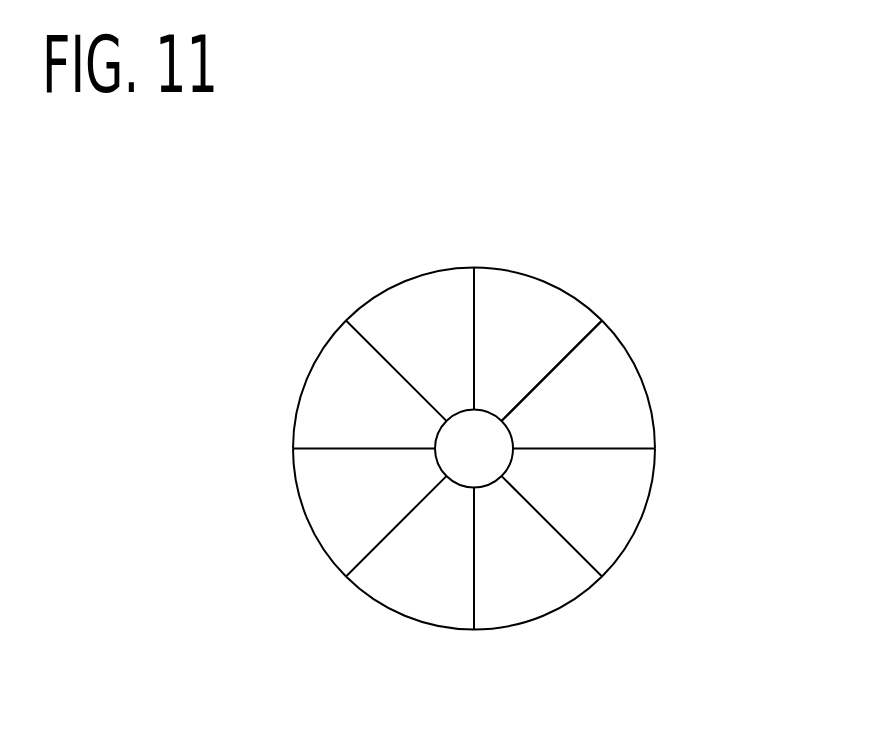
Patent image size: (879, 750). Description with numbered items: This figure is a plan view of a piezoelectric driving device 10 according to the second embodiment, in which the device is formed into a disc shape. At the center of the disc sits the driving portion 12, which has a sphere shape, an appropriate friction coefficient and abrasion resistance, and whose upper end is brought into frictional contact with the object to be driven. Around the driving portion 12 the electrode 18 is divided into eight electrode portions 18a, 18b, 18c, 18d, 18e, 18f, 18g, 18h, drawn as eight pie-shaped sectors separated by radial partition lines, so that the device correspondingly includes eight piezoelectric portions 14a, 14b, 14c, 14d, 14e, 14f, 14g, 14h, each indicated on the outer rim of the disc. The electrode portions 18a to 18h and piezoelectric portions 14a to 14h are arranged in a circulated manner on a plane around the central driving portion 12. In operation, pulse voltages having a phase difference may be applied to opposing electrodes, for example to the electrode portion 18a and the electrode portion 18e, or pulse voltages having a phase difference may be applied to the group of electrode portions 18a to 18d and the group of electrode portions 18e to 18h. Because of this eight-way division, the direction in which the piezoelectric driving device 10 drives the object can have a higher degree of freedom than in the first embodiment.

The piezoelectric driving device 10 is at (499, 180).
The driving portion 12 is at (450, 437).
The piezoelectric portion 14a is at (630, 348).
The piezoelectric portion 14b is at (633, 540).
The piezoelectric portion 14c is at (507, 632).
The piezoelectric portion 14d is at (368, 597).
The piezoelectric portion 14e is at (294, 485).
The piezoelectric portion 14f is at (318, 354).
The piezoelectric portion 14g is at (438, 268).
The piezoelectric portion 14h is at (583, 300).
The electrode 18 is at (607, 322).
The electrode portion 18a is at (628, 392).
The electrode portion 18b is at (648, 472).
The electrode portion 18c is at (573, 585).
The electrode portion 18d is at (428, 610).
The electrode portion 18e is at (330, 535).
The electrode portion 18f is at (307, 417).
The electrode portion 18g is at (390, 302).
The electrode portion 18h is at (523, 290).